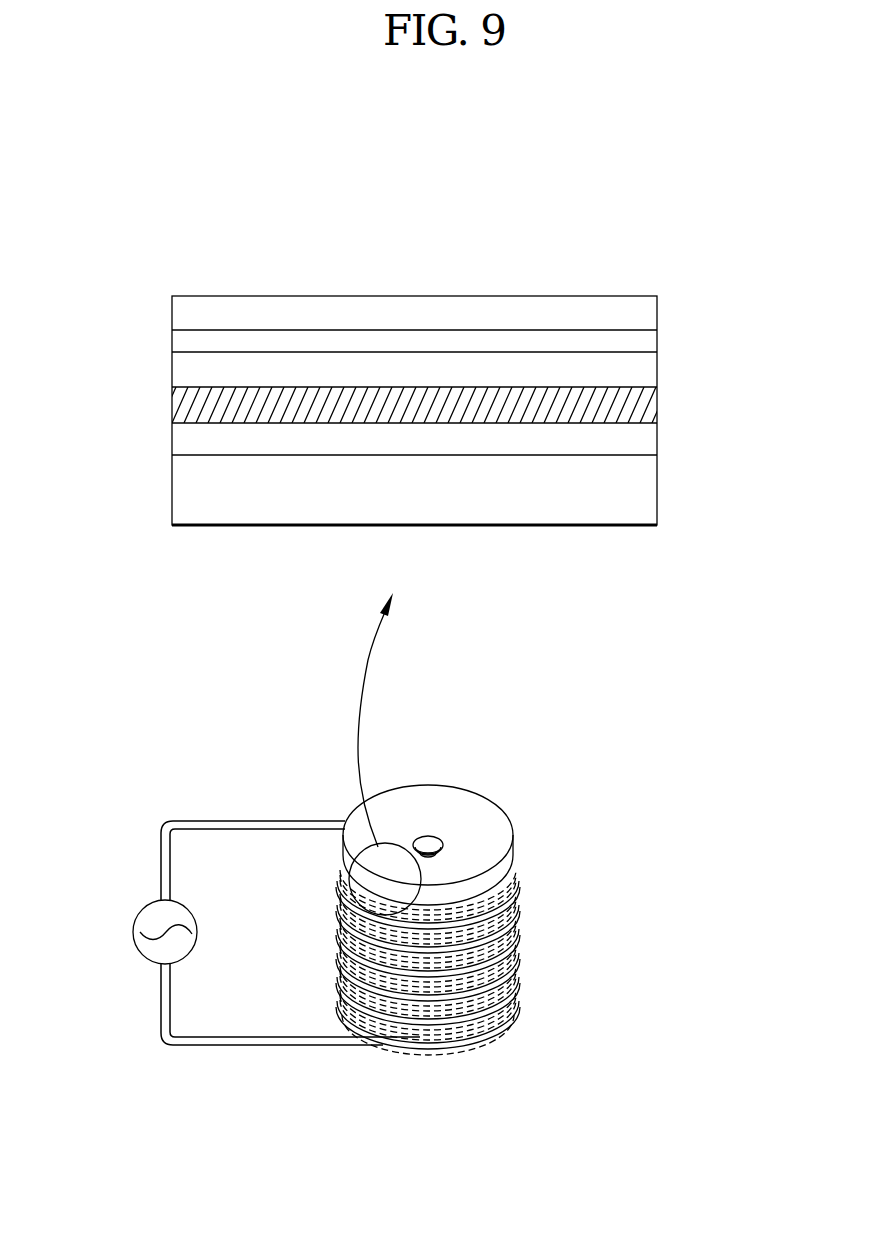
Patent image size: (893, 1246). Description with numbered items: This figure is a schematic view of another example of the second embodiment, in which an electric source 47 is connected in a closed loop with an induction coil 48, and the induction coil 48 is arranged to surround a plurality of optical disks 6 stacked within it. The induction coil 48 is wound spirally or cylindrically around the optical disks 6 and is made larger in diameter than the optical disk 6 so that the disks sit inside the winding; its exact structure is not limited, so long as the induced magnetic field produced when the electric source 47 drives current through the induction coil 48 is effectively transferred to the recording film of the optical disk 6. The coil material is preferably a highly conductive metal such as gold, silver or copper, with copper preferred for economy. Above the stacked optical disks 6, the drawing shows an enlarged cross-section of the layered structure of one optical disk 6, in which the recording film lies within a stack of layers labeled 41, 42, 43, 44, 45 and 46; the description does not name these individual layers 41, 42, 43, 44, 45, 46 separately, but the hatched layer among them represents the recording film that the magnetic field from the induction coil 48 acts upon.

The optical disk 6 is at (431, 284).
The substrate 41 is at (648, 493).
The underlayer 42 is at (648, 436).
The magnetic layer 43 is at (648, 407).
The intermediate layer 44 is at (648, 375).
The protective layer 45 is at (648, 342).
The lubricant layer 46 is at (648, 317).
The electric source 47 is at (138, 927).
The induction coil 48 is at (513, 922).